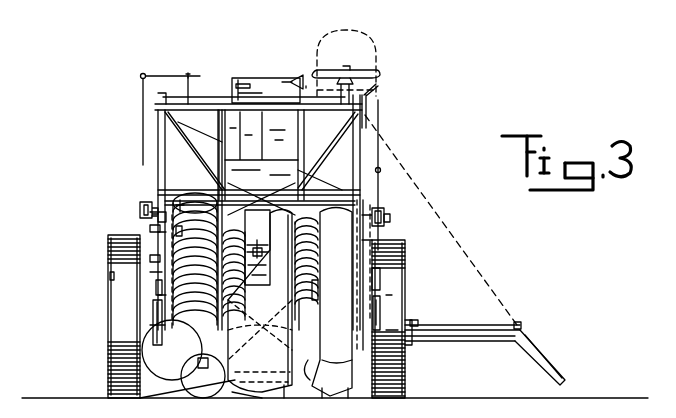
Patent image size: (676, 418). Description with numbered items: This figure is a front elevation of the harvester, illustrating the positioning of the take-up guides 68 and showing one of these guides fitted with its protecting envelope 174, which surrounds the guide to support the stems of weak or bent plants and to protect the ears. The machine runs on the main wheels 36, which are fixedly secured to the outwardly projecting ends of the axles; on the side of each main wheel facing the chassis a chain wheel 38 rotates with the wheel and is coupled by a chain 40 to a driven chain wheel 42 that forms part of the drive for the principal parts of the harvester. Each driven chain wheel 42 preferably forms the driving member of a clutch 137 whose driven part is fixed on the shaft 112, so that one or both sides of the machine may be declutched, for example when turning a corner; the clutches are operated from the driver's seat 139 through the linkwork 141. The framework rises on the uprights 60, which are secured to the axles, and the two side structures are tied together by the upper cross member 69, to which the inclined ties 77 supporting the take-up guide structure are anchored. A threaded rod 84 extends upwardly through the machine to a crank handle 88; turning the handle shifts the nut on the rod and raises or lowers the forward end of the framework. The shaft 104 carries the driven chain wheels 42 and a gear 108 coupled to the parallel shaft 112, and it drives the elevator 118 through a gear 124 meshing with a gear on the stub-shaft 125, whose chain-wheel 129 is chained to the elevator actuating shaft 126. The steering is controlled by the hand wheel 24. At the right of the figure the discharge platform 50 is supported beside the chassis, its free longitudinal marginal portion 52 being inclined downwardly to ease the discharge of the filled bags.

The hand wheel 24 is at (380, 73).
The main wheel 36 is at (388, 319).
The chain wheel 38 is at (382, 298).
The chain 40 is at (380, 237).
The driven chain wheel 42 is at (388, 224).
The discharge platform 50 is at (485, 325).
The free longitudinal marginal portion 52 is at (538, 352).
The upright 60 is at (158, 125).
The take-up guide 68 is at (247, 254).
The upper cross member 69 is at (368, 105).
The inclined tie 77 is at (222, 170).
The rod 84 is at (282, 136).
The crank handle 88 is at (242, 92).
The shaft 104 is at (160, 283).
The gear 108 is at (162, 296).
The shaft 112 is at (150, 213).
The elevator 118 is at (222, 150).
The gear 124 is at (172, 208).
The stub-shaft 125 is at (150, 228).
The third shaft 126 is at (152, 276).
The chain-wheel 129 is at (158, 258).
The clutch 137 is at (385, 210).
The driver's seat 139 is at (385, 43).
The linkwork 141 is at (382, 127).
The protecting envelope 174 is at (383, 272).